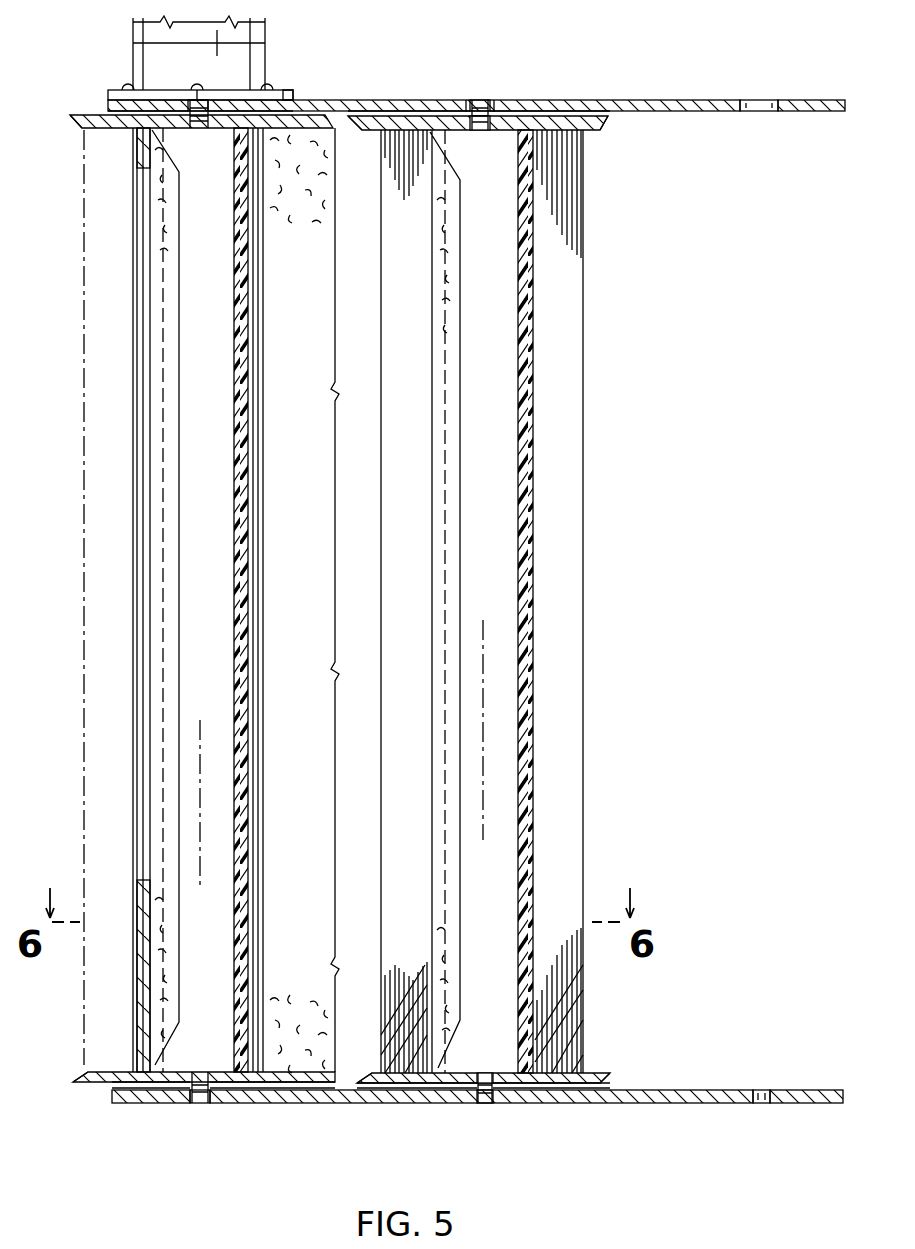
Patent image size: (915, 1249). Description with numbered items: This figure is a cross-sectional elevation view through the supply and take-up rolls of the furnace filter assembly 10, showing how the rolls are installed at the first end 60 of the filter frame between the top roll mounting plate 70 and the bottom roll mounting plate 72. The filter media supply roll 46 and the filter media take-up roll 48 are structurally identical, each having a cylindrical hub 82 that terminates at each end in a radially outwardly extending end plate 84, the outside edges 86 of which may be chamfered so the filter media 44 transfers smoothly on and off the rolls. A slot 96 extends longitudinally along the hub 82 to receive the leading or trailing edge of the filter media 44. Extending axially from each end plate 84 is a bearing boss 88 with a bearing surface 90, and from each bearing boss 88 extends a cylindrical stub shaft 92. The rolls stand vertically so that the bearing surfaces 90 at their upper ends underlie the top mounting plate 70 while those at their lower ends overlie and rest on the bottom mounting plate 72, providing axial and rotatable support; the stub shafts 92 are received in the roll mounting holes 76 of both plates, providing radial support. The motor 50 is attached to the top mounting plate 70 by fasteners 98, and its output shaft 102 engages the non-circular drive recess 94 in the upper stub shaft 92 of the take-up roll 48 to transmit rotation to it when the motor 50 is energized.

The furnace filter assembly 10 is at (701, 58).
The filter media 44 is at (135, 632).
The filter media supply roll 46 is at (595, 836).
The filter media take-up roll 48 is at (115, 488).
The motor 50 is at (133, 28).
The first end 60 is at (385, 67).
The top roll mounting plate 70 is at (611, 89).
The bottom roll mounting plate 72 is at (713, 1111).
The roll mounting hole 76 is at (188, 100).
The cylindrical hub 82 is at (243, 303).
The end plate 84 is at (120, 125).
The outside edges 86 is at (71, 130).
The bearing boss 88 is at (224, 113).
The bearing surface 90 is at (178, 107).
The stub shaft 92 is at (485, 102).
The drive recess 94 is at (285, 93).
The slot 96 is at (130, 1098).
The fasteners 98 is at (125, 88).
The output shaft 102 is at (210, 100).